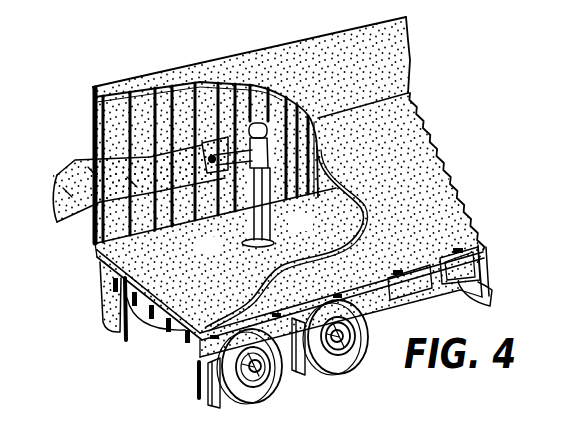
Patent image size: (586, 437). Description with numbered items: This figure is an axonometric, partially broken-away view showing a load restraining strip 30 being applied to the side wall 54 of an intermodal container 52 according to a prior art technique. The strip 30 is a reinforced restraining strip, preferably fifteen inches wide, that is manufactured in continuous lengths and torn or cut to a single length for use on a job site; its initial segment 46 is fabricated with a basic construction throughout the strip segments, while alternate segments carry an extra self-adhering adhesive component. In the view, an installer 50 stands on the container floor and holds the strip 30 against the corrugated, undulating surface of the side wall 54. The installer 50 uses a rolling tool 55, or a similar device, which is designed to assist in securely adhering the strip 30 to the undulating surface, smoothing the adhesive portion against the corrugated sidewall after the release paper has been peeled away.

The load restraining strip 30 is at (66, 152).
The initial segment 46 is at (82, 211).
The installer 50 is at (272, 219).
The intermodal container 52 is at (411, 60).
The side wall 54 is at (152, 108).
The rolling tool 55 is at (206, 197).